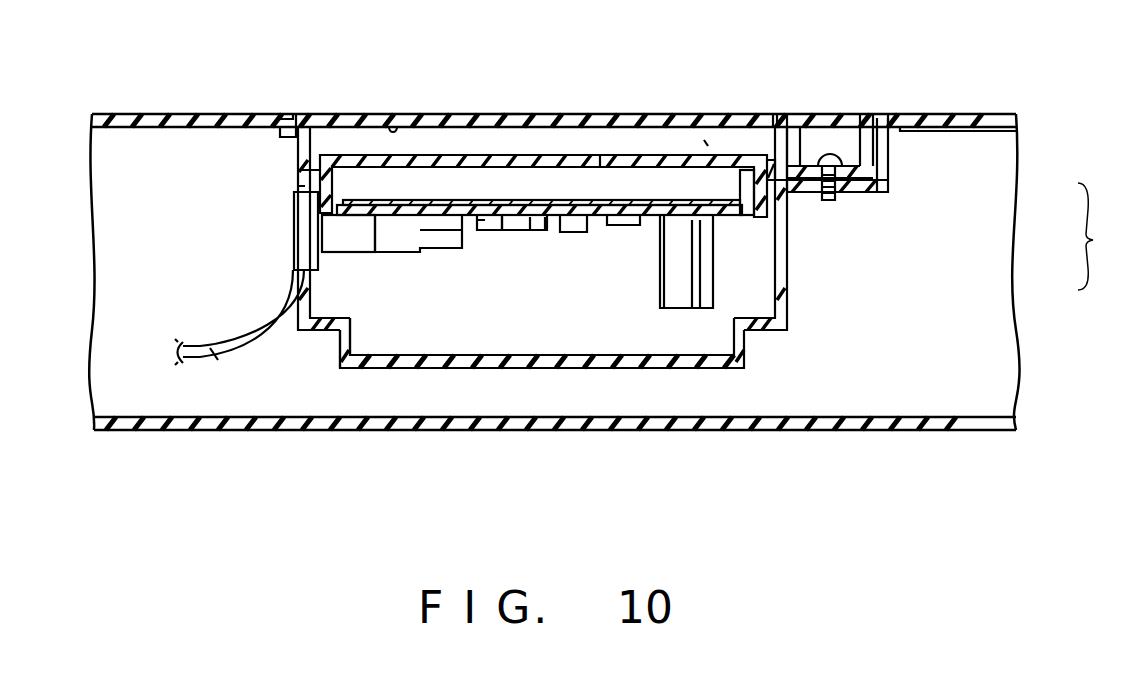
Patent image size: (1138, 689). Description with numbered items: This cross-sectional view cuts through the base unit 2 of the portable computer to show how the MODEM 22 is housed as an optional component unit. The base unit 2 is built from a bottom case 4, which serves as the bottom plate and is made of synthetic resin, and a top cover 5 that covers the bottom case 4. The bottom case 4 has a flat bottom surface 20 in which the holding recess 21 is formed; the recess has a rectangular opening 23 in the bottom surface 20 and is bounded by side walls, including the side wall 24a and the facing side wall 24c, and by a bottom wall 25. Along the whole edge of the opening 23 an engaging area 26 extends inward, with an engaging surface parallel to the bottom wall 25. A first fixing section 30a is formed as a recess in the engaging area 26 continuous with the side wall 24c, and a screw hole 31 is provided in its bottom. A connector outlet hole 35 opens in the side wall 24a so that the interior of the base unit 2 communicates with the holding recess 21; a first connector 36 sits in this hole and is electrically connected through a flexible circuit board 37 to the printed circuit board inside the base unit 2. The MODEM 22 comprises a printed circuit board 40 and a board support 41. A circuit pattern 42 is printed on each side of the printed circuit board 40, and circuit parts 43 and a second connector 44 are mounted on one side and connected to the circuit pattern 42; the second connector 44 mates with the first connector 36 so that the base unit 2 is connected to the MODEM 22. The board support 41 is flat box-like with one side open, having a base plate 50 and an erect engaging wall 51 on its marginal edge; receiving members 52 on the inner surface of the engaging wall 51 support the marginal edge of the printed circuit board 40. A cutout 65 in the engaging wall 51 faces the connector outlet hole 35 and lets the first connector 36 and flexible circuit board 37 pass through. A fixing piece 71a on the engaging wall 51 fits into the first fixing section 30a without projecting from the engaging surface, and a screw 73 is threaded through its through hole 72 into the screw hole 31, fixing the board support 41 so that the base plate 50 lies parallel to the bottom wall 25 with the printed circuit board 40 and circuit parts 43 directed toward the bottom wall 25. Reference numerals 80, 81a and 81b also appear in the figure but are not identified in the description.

The base unit 2 is at (1096, 236).
The bottom case 4 is at (988, 128).
The top cover 5 is at (940, 420).
The bottom surface 20 is at (950, 116).
The holding recess 21 is at (446, 340).
The MODEM 22 is at (707, 145).
The opening 23 is at (297, 121).
The side wall 24a is at (323, 143).
The side wall 24c is at (784, 275).
The bottom wall 25 is at (592, 368).
The engaging area 26 is at (899, 118).
The first fixing section 30a is at (866, 192).
The screw hole 31 is at (822, 201).
The connector outlet hole 35 is at (303, 328).
The first connector 36 is at (352, 248).
The flexible circuit board 37 is at (253, 335).
The printed circuit board 40 is at (542, 232).
The board support 41 is at (437, 154).
The circuit pattern 42 is at (567, 199).
The circuit parts 43 is at (660, 264).
The second connector 44 is at (408, 248).
The base plate 50 is at (612, 154).
The engaging wall 51 is at (763, 220).
The receiving members 52 is at (740, 180).
The cutout 65 is at (299, 172).
The fixing piece 71a is at (878, 174).
The through hole 72 is at (808, 158).
The screw 73 is at (840, 160).
The cover 80 is at (503, 113).
The projection 81a is at (393, 127).
The projection 81b is at (674, 116).